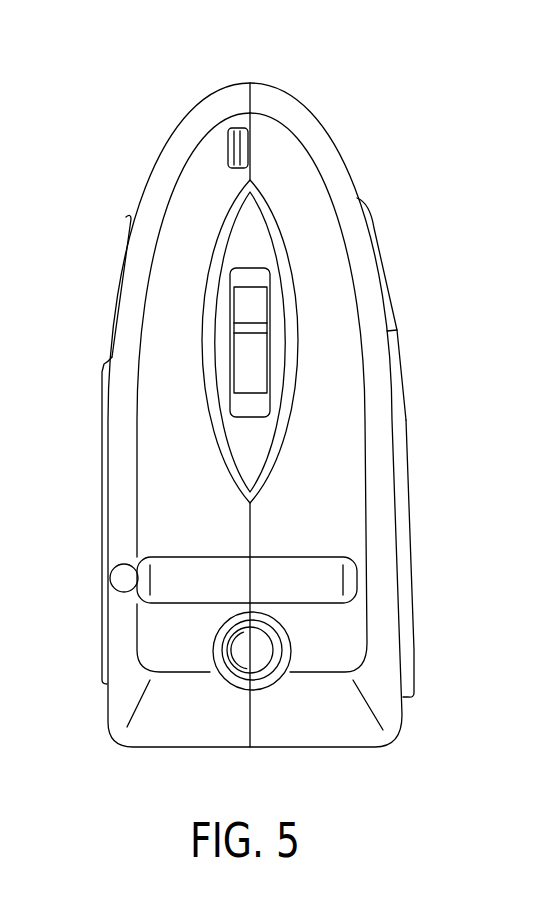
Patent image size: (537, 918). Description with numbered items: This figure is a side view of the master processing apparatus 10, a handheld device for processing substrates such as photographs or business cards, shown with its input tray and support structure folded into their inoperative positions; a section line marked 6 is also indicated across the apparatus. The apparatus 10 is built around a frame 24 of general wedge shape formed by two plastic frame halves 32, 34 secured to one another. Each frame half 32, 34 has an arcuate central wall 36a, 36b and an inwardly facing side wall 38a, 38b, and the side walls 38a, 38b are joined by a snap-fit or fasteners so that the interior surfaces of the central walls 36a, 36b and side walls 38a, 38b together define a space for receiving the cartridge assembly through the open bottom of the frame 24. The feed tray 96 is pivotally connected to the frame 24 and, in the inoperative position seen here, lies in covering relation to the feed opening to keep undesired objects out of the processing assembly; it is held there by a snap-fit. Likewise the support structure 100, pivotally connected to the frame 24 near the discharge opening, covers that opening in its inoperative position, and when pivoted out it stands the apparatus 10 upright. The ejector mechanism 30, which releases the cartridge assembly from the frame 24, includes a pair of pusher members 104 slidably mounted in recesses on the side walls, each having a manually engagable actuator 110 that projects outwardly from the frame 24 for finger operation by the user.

The master processing apparatus 10 is at (254, 376).
The frame 24 is at (305, 120).
The frame half 34 is at (143, 165).
The frame half 32 is at (348, 175).
The arcuate central wall 36a is at (357, 199).
The arcuate central wall 36b is at (82, 426).
The feed tray 96 is at (113, 280).
The inwardly facing side wall 38b is at (155, 415).
The inwardly facing side wall 38a is at (330, 446).
The support structure 100 is at (408, 574).
The manually engagable actuator 110 is at (258, 640).
The pusher member 104 is at (267, 658).
The ejector mechanism 30 is at (265, 670).
The section line 6- 6 is at (233, 70).